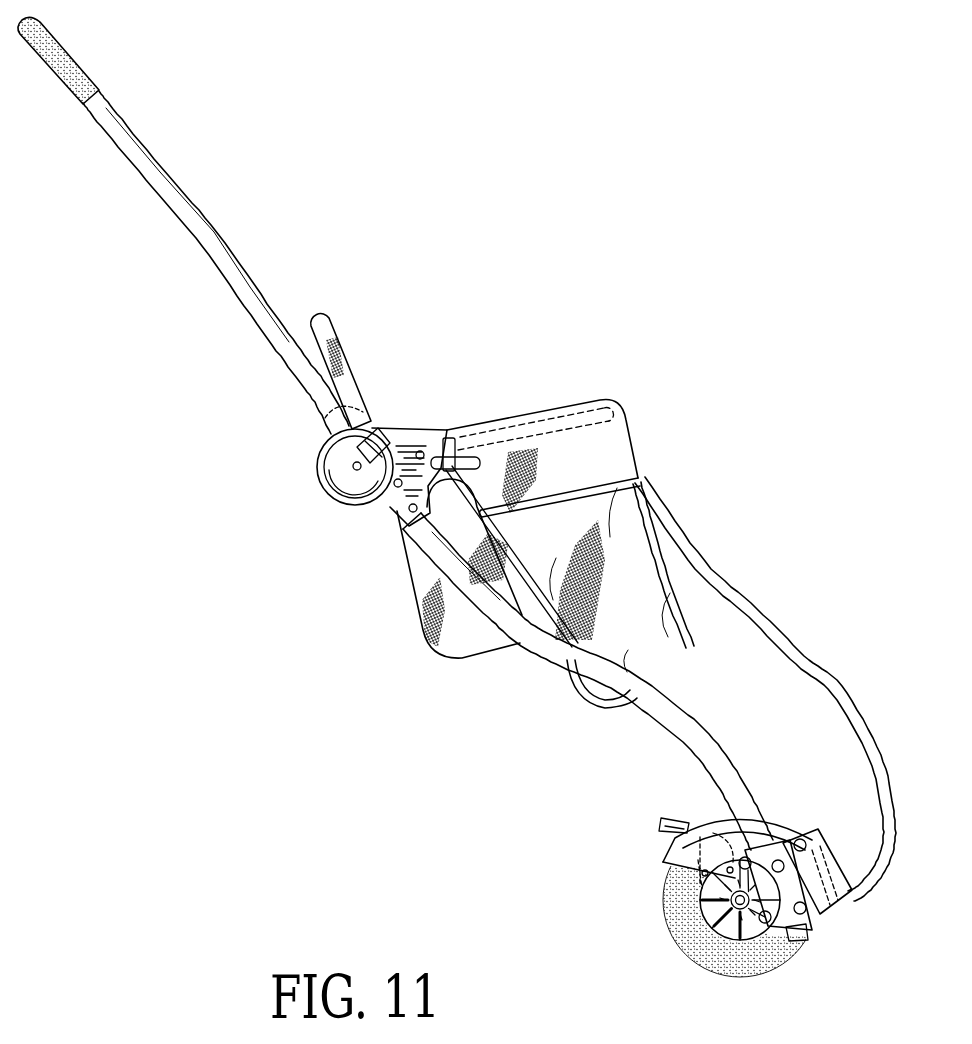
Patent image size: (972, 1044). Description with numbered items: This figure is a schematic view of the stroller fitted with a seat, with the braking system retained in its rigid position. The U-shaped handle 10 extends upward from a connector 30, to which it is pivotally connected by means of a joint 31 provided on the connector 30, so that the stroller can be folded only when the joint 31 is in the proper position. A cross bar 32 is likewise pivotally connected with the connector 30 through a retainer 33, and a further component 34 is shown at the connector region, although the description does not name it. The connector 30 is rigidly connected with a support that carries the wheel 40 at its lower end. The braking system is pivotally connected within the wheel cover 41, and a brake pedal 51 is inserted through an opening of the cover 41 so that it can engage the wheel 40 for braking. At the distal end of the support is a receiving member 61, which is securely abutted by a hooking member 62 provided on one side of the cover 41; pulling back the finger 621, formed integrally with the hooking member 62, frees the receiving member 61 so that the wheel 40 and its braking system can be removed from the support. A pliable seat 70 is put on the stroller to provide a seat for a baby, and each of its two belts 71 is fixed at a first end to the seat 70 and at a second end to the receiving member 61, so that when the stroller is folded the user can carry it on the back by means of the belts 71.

The handle 10 is at (226, 272).
The connector 30 is at (384, 503).
The joint 31 is at (337, 474).
The cross bar 32 is at (355, 367).
The retainer 33 is at (448, 455).
The positioning block 34 is at (380, 428).
The wheel 40 is at (697, 960).
The wheel cover 41 is at (675, 852).
The brake pedal 51 is at (667, 815).
The receiving member 61 is at (840, 902).
The hooking member 62 is at (777, 925).
The finger 621 is at (798, 936).
The pliable seat 70 is at (634, 406).
The belt 71 is at (752, 612).